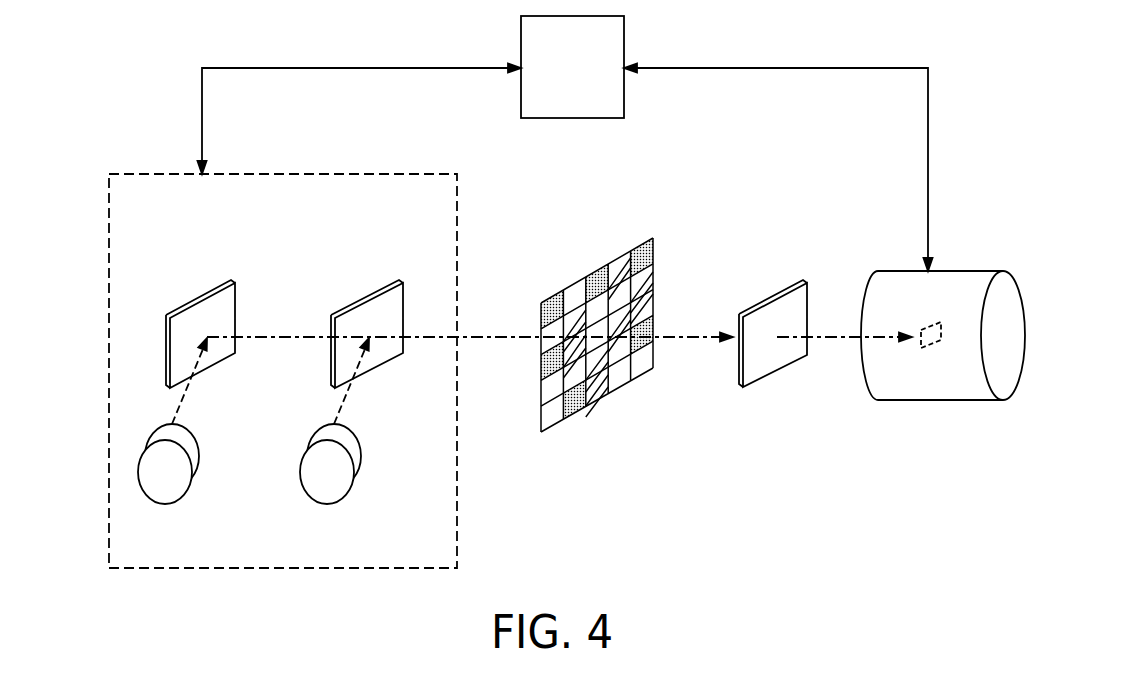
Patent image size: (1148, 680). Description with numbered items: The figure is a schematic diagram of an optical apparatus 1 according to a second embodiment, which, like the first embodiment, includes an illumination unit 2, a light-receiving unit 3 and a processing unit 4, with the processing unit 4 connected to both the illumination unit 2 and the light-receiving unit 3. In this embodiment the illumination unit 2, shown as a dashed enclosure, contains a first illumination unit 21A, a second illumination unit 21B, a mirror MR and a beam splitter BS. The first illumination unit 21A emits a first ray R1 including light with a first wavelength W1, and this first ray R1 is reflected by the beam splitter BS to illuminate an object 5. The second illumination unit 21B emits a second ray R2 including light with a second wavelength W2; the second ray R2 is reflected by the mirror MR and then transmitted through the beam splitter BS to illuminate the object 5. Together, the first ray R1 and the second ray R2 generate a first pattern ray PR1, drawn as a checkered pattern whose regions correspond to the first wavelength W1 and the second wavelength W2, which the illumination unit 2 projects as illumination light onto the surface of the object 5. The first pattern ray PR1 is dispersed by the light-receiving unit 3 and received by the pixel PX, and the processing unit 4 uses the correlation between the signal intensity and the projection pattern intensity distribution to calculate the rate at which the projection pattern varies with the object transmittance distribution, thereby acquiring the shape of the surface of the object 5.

The optical apparatus 1 is at (871, 473).
The illumination unit 2 is at (422, 170).
The light-receiving unit 3 is at (975, 271).
The processing unit 4 is at (624, 28).
The object 5 is at (788, 283).
The first illumination unit 21A is at (354, 487).
The second illumination unit 21B is at (192, 487).
The mirror MR is at (222, 290).
The beam splitter BS is at (387, 290).
The first ray R1 is at (345, 402).
The second ray R2 is at (183, 402).
The first pattern ray PR1 is at (621, 319).
The first wavelength W1 is at (600, 393).
The second wavelength W2 is at (645, 352).
The pixel PX is at (930, 348).